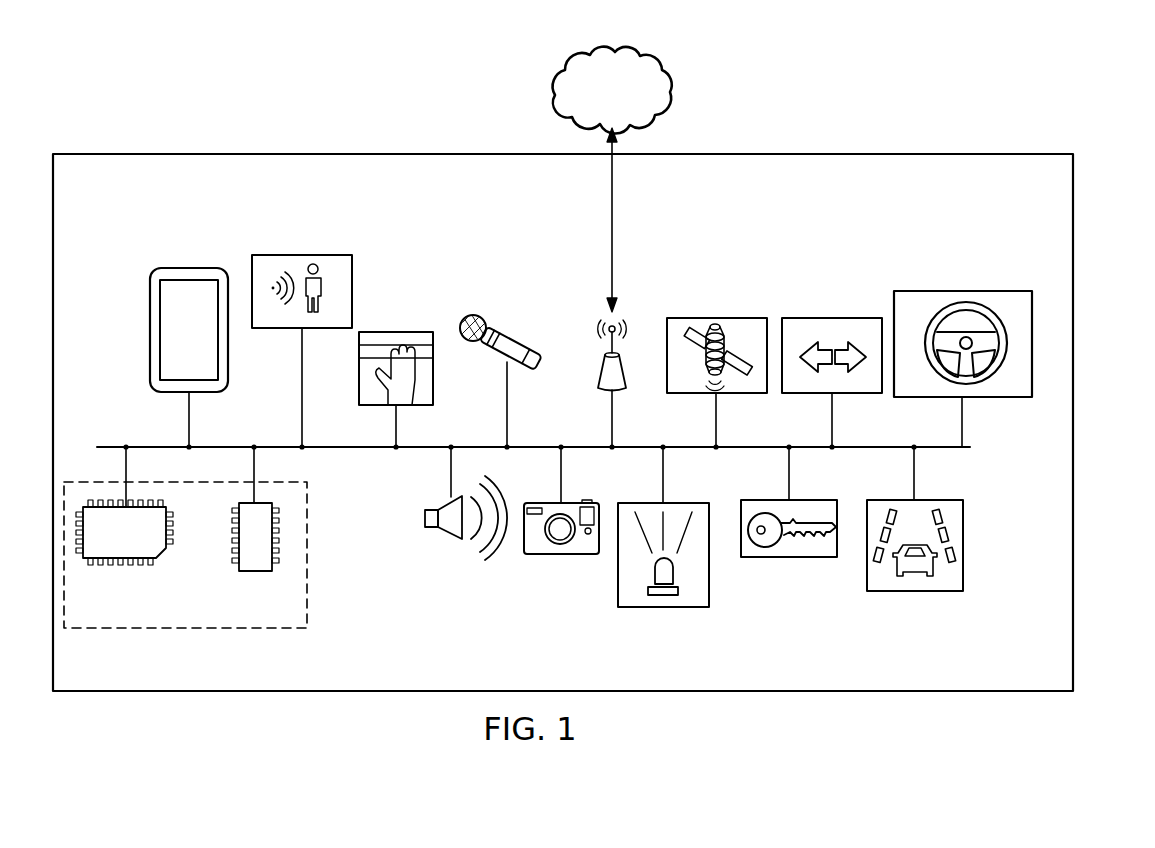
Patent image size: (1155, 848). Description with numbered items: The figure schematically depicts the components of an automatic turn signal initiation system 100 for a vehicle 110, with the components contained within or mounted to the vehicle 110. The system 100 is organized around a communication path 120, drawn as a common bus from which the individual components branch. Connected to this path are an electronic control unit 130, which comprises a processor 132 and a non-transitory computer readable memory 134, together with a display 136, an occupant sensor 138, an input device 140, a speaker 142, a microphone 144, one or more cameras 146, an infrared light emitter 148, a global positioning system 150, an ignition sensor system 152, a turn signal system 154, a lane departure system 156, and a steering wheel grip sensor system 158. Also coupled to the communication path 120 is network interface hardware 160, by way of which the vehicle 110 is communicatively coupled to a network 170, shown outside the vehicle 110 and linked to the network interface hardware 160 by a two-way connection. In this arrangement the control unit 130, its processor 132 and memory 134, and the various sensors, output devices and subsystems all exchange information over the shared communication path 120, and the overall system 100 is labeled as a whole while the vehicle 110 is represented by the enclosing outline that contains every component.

The automatic turn signal initiation system 100 is at (1080, 116).
The vehicle 110 is at (1073, 258).
The communication path 120 is at (108, 447).
The electronic control unit 130 is at (308, 610).
The processor 132 is at (158, 558).
The non-transitory computer readable memory 134 is at (254, 571).
The display 136 is at (189, 268).
The occupant sensor 138 is at (302, 255).
The input device 140 is at (396, 332).
The speaker 142 is at (445, 540).
The microphone 144 is at (512, 338).
The cameras 146 is at (562, 554).
The infrared light emitter 148 is at (663, 607).
The global positioning system 150 is at (716, 318).
The ignition sensor system 152 is at (789, 557).
The turn signal system 154 is at (832, 318).
The lane departure system 156 is at (914, 591).
The steering wheel grip sensor system 158 is at (962, 291).
The network interface hardware 160 is at (603, 362).
The network 170 is at (550, 90).